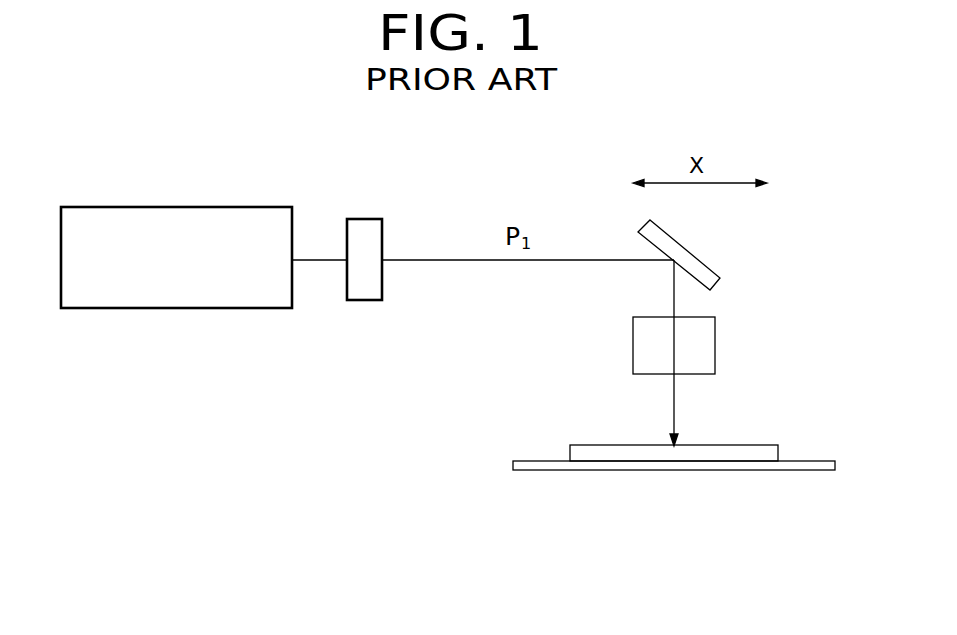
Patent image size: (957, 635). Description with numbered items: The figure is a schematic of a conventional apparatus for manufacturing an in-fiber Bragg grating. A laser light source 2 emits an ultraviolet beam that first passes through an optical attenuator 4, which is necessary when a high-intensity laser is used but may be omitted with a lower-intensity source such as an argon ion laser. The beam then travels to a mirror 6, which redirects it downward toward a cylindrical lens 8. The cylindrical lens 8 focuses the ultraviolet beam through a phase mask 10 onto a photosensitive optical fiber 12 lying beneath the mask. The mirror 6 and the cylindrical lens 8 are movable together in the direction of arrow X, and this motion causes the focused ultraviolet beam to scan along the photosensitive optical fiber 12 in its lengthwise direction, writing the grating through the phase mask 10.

The laser light source 2 is at (165, 207).
The optical attenuator 4 is at (365, 219).
The mirror 6 is at (687, 249).
The cylindrical lens 8 is at (715, 337).
The phase mask 10 is at (748, 445).
The photosensitive optical fiber 12 is at (513, 467).